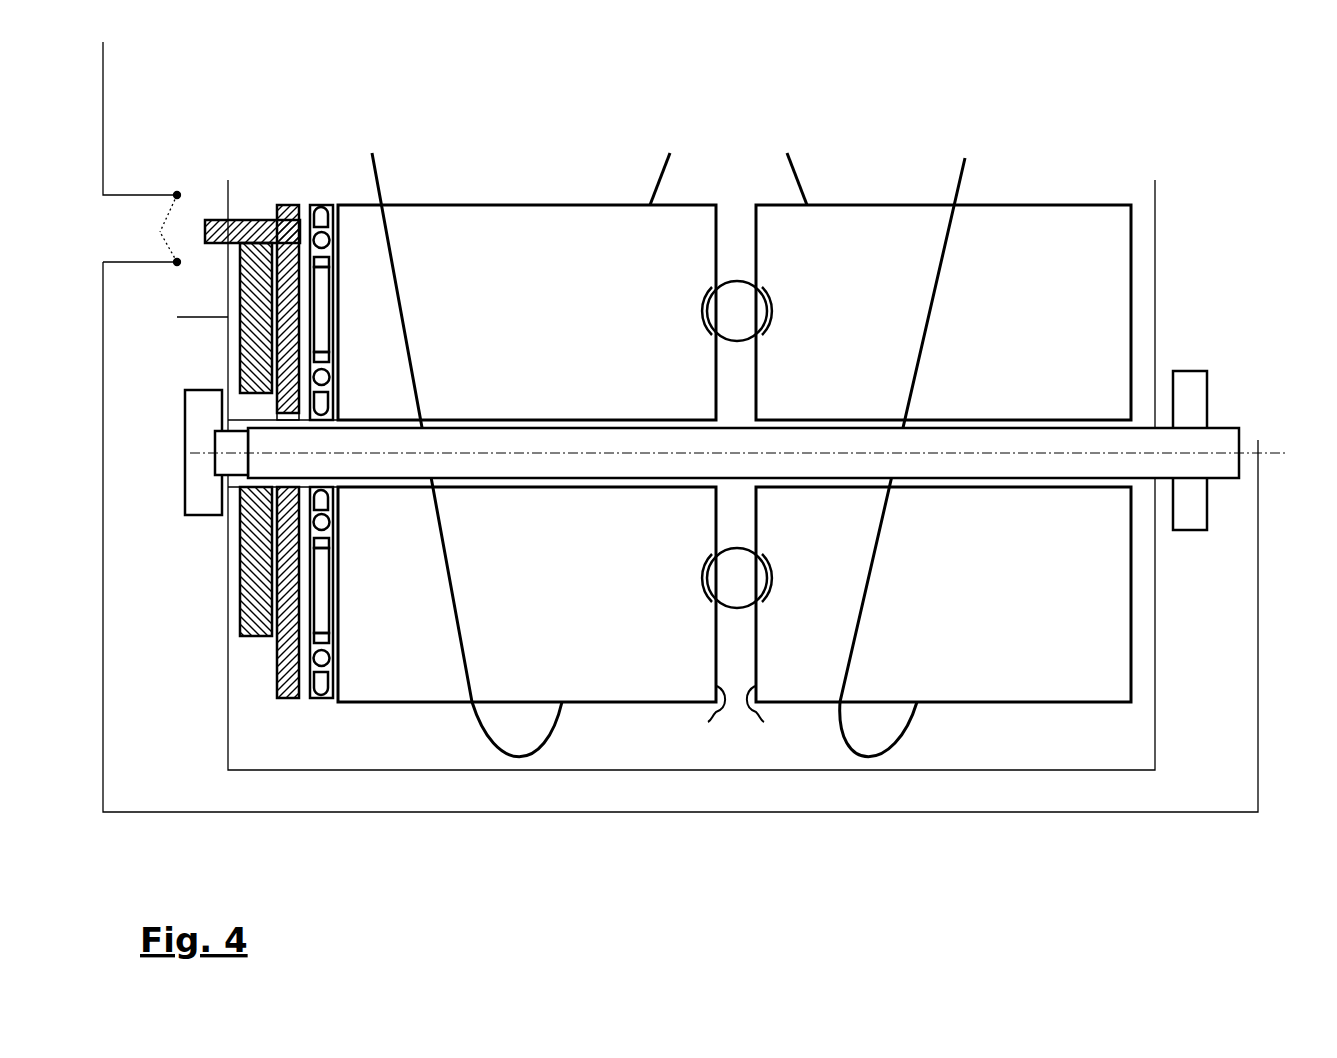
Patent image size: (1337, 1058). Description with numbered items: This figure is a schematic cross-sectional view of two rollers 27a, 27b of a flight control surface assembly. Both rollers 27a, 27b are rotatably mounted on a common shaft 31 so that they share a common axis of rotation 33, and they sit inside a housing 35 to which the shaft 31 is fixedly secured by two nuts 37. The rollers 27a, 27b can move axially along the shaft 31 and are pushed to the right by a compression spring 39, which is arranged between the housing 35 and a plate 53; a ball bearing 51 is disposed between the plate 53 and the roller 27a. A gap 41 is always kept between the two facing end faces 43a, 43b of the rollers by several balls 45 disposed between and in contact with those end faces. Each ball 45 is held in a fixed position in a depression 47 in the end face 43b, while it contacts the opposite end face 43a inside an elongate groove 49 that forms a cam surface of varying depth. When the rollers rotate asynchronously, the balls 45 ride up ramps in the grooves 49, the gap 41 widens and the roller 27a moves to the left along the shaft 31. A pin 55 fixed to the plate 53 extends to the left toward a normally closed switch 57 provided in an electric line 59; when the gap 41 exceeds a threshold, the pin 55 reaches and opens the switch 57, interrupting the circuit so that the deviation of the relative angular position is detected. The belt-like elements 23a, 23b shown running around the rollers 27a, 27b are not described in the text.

The electric line 59 is at (104, 123).
The switch 57 is at (158, 223).
The pin 55 is at (238, 220).
The ball bearing 51 is at (322, 196).
The first belt 23a is at (380, 175).
The second belt 23b is at (965, 158).
The first roller 27a is at (472, 218).
The second roller 27b is at (1040, 215).
The gap 41 is at (737, 222).
The ball 45 is at (742, 302).
The elongate groove 49 is at (712, 315).
The depression 47 is at (765, 313).
The nut 37 is at (1197, 393).
The axis of rotation 33 is at (1270, 450).
The shaft 31 is at (1225, 465).
The housing 35 is at (1157, 262).
The compression spring 39 is at (246, 337).
The plate 53 is at (285, 700).
The end face 43a is at (708, 722).
The end face 43b is at (764, 722).